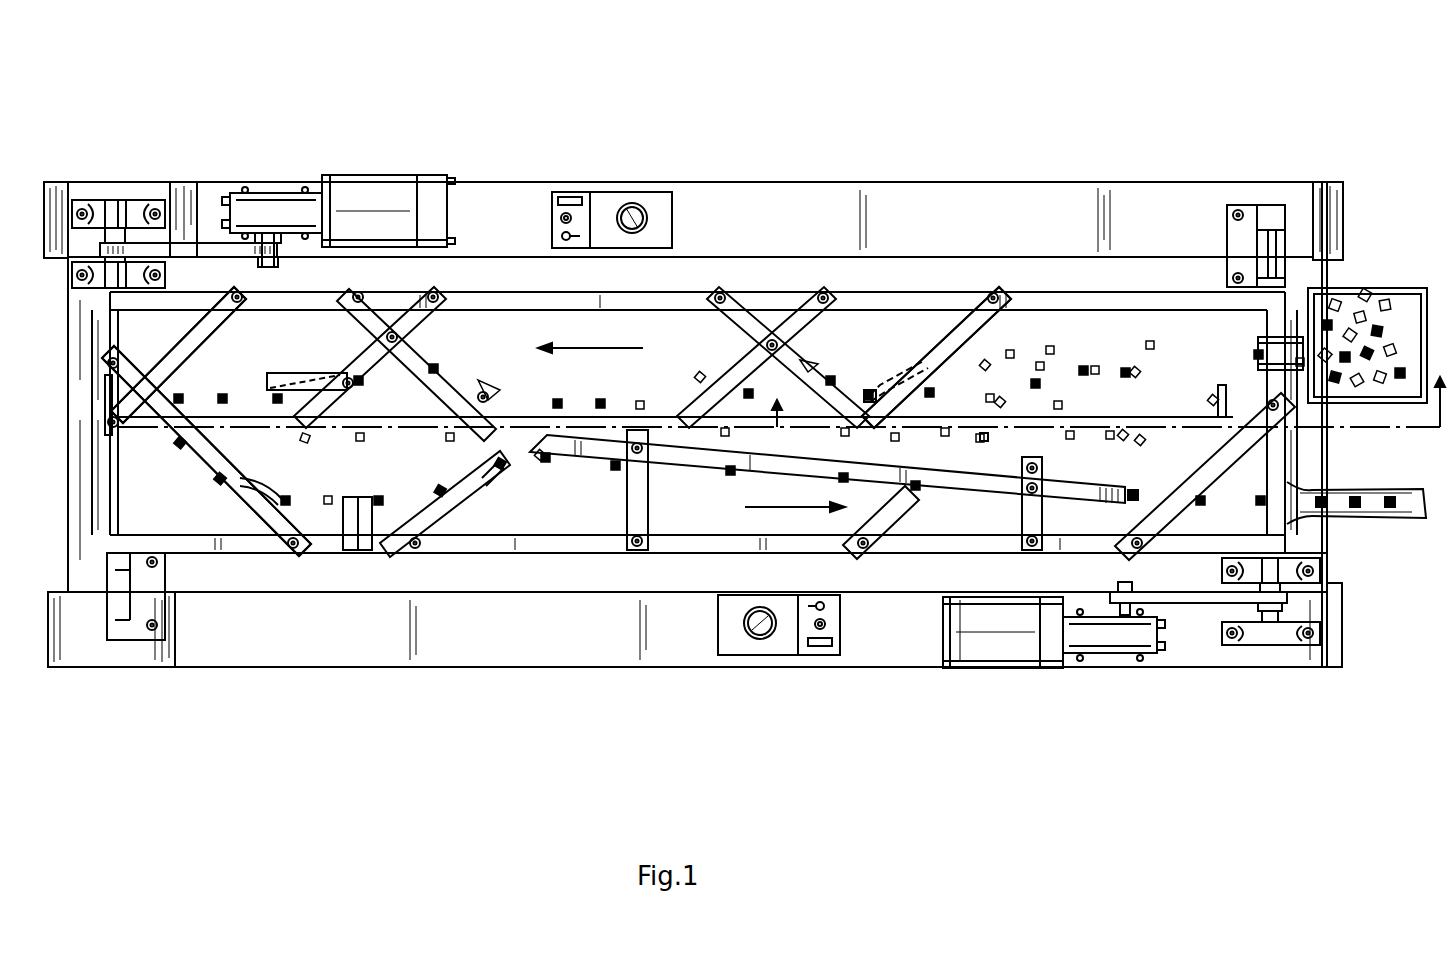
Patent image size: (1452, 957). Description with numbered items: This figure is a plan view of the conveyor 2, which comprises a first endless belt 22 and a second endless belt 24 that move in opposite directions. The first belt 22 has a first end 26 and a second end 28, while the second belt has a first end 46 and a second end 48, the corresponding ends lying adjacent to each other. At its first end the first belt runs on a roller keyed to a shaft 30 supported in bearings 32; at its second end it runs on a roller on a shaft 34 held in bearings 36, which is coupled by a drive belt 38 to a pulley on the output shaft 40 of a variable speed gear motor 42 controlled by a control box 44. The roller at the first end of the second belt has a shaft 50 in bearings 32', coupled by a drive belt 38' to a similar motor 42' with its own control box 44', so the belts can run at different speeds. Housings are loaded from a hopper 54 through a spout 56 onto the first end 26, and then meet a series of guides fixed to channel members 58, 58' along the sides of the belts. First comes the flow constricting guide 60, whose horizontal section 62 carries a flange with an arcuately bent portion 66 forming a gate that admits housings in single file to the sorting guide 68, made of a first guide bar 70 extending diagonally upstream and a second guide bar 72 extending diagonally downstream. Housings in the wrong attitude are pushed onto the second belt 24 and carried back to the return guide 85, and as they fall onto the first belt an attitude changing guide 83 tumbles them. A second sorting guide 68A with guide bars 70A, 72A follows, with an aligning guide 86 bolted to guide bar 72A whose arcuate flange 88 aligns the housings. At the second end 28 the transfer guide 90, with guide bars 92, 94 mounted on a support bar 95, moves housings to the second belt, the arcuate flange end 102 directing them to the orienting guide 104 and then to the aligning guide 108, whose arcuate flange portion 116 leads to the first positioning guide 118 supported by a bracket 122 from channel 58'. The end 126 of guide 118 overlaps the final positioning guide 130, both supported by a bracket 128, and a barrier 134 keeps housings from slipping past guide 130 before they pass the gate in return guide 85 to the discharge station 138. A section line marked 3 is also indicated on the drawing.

The conveyor 2 is at (708, 118).
The section line 3- 3 is at (783, 386).
The first endless belt 22 is at (680, 335).
The second endless belt 24 is at (563, 510).
The first end of first belt 26 is at (1187, 330).
The second end of first belt 28 is at (247, 330).
The shaft 30 is at (1273, 248).
The bearings 32 is at (1322, 259).
The bearings 32' is at (1326, 612).
The shaft 34 is at (107, 238).
The bearings 36 is at (100, 203).
The drive belt 38 is at (188, 191).
The drive belt 38' is at (1198, 645).
The output shaft 40 is at (273, 240).
The variable speed gear motor 42 is at (338, 178).
The motor 42' is at (1054, 655).
The control box 44 is at (612, 188).
The control box 44' is at (779, 650).
The first end of second belt 46 is at (1260, 453).
The second end of second belt 48 is at (133, 507).
The shaft 50 is at (1280, 617).
The hopper 54 is at (1390, 308).
The spout 56 is at (1265, 356).
The channel member 58 is at (697, 381).
The channel member 58' is at (695, 601).
The flow constricting guide 60 is at (985, 288).
The horizontal section 62 is at (967, 330).
The arcuately bent flange portion 66 is at (873, 396).
The sorting guide 68 is at (773, 325).
The second sorting guide 68A is at (398, 315).
The first guide bar 70 is at (815, 370).
The first guide bar 70A is at (480, 377).
The second guide bar 72 is at (715, 391).
The second guide bar 72A is at (430, 323).
The attitude changing guide 83 is at (1232, 412).
The return guide 85 is at (1212, 468).
The aligning guide 86 is at (278, 383).
The flange 88 is at (328, 371).
The transfer guide 90 is at (145, 372).
The guide bar 92 is at (185, 355).
The guide bar 94 is at (200, 455).
The support bar 95 is at (110, 393).
The flange end 102 is at (265, 490).
The orienting guide 104 is at (365, 548).
The aligning guide 108 is at (455, 508).
The arcuate flange portion 116 is at (495, 487).
The first positioning guide 118 is at (767, 457).
The support bracket 122 is at (645, 509).
The end of guide 118 126 is at (980, 433).
The bracket 128 is at (1040, 513).
The final positioning guide 130 is at (1080, 490).
The barrier 134 is at (912, 507).
The discharge station 138 is at (1373, 510).